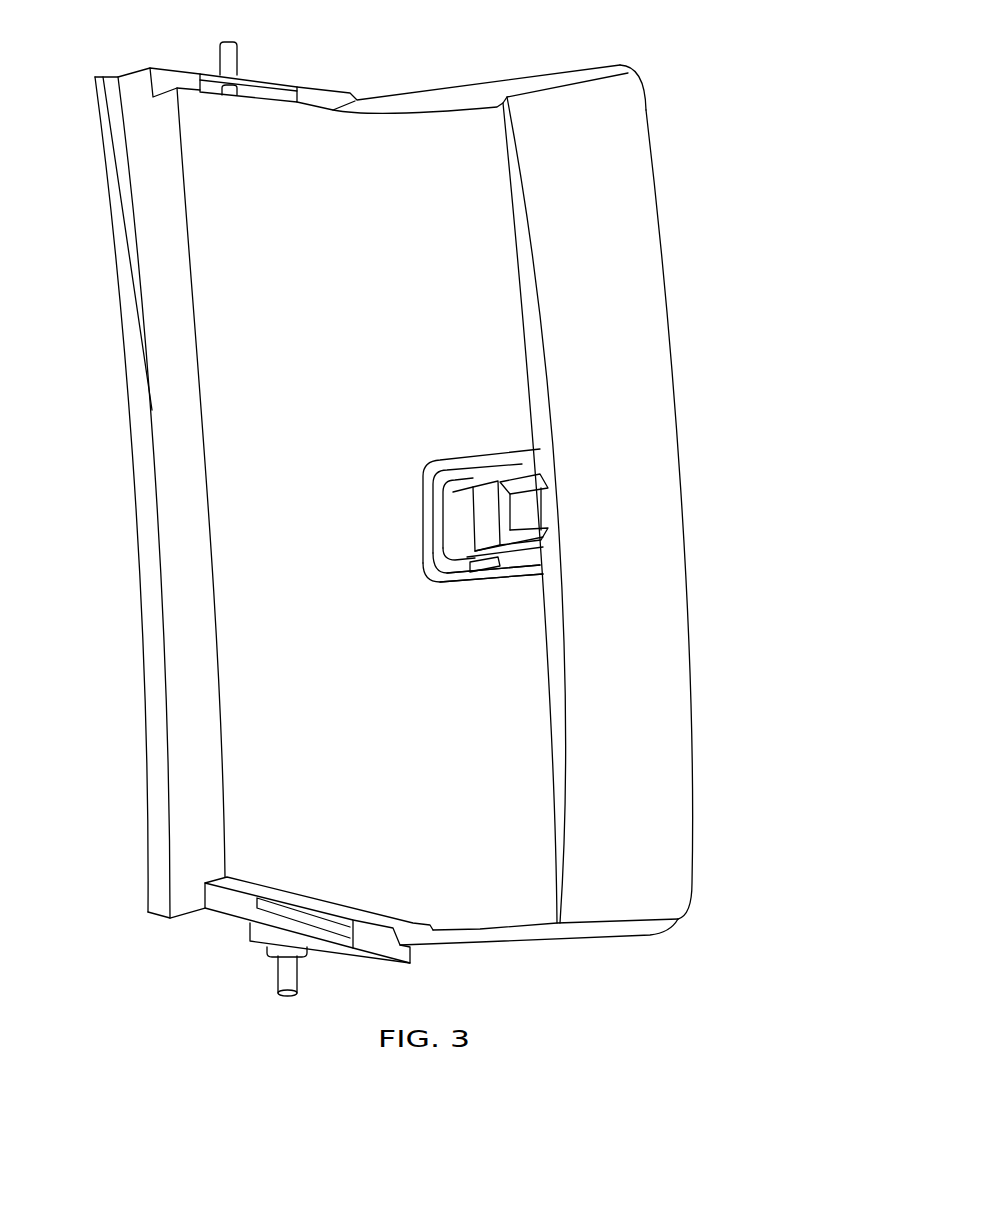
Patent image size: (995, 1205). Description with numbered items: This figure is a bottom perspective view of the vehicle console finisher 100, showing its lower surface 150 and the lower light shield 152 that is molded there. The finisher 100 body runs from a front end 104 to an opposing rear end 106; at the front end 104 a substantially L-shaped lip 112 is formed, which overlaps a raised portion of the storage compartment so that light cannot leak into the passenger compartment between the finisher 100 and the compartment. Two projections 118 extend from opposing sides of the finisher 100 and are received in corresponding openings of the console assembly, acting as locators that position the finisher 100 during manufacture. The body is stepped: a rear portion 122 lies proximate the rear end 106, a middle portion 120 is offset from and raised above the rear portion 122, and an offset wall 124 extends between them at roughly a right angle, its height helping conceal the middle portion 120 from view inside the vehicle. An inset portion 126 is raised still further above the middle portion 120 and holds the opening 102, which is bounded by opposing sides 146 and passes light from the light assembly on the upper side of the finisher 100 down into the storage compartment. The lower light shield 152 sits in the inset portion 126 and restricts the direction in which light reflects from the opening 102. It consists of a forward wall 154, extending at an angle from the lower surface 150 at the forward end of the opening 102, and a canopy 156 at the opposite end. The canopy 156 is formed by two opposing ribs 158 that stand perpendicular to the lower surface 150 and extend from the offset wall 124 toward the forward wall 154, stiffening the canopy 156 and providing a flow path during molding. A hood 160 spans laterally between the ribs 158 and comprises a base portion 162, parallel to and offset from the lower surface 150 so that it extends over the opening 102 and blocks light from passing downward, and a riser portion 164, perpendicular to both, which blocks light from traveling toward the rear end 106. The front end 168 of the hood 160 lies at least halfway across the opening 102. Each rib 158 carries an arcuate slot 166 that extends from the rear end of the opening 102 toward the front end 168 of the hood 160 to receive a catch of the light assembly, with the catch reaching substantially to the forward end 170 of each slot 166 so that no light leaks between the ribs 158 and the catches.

The finisher 100 is at (668, 42).
The opening 102 is at (465, 522).
The front end 104 is at (137, 493).
The rear end 106 is at (683, 493).
The lip 112 is at (183, 579).
The projection 118 is at (233, 62).
The middle portion 120 is at (477, 888).
The rear portion 122 is at (630, 638).
The offset wall 124 is at (543, 390).
The inset portion 126 is at (497, 574).
The sides of the opening 146 is at (465, 490).
The lower surface 150 is at (410, 147).
The lower light shield 152 is at (450, 482).
The forward wall 154 is at (457, 532).
The canopy 156 is at (488, 480).
The rib 158 is at (522, 484).
The hood 160 is at (472, 540).
The base portion 162 is at (492, 534).
The riser portion 164 is at (505, 530).
The slot 166 is at (470, 566).
The front end of the hood 168 is at (472, 500).
The forward end of the slot 170 is at (473, 547).